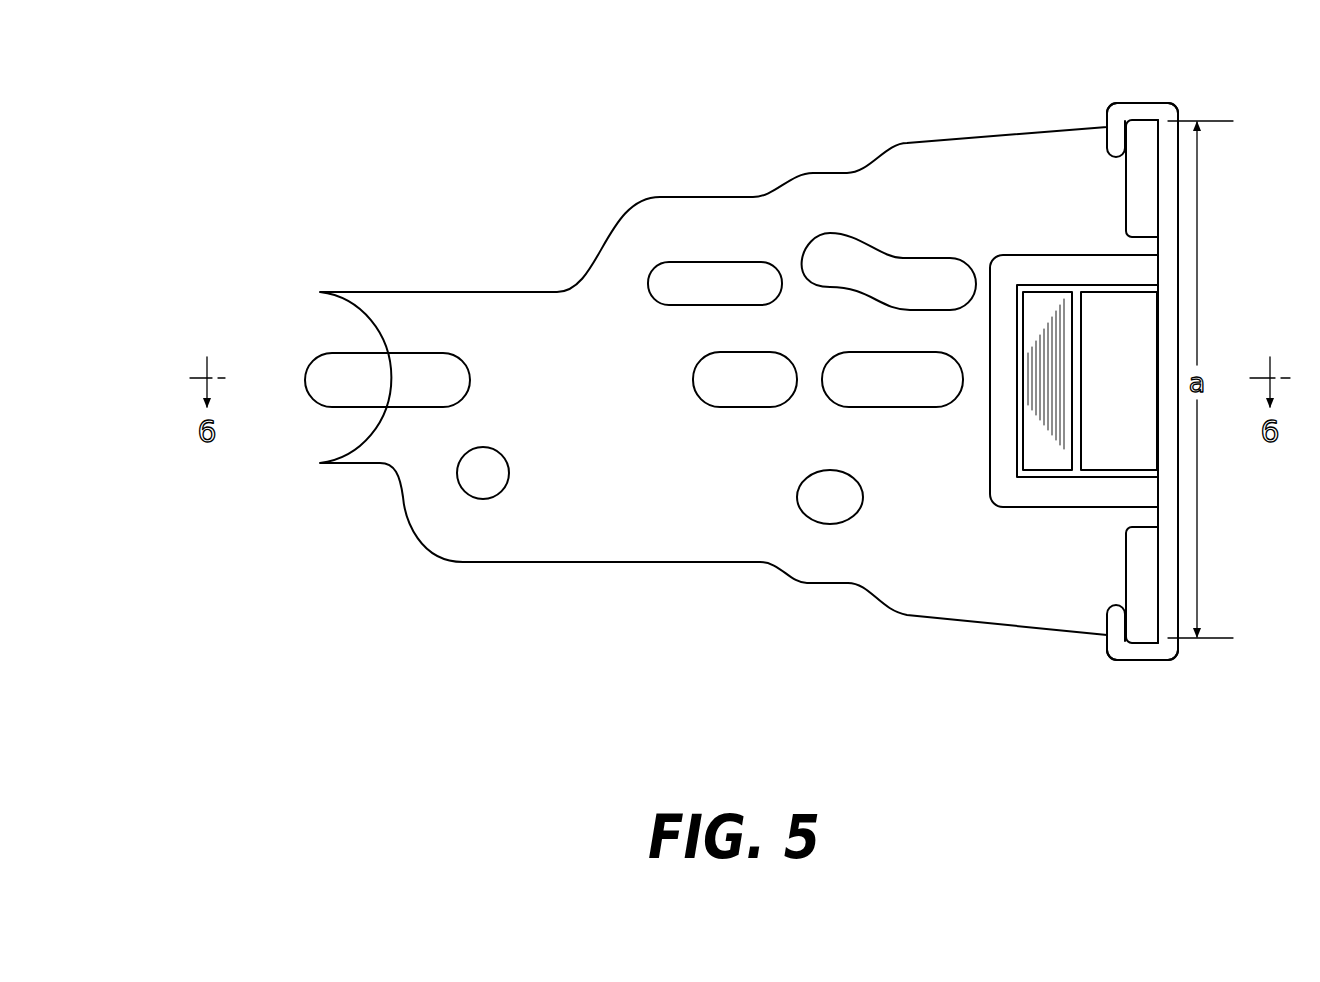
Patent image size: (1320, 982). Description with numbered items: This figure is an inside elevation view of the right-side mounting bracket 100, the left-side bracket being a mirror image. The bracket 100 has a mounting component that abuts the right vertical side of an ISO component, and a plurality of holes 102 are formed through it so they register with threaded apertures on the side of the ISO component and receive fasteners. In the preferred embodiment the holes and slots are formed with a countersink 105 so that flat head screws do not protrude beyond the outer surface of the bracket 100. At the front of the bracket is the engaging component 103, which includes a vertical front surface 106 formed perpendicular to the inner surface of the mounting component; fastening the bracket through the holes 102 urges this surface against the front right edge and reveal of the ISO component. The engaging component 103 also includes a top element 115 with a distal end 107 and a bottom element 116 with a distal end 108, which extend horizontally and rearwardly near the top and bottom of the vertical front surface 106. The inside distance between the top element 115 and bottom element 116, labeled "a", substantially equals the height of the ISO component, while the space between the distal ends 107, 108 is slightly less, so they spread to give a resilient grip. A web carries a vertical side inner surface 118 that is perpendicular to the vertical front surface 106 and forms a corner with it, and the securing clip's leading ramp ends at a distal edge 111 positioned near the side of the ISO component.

The right-side mounting bracket 100 is at (642, 496).
The holes 102 is at (696, 366).
The engaging component 103 is at (1161, 112).
The countersink 105 is at (647, 280).
The vertical front surface 106 is at (1161, 582).
The distal end 107 is at (1116, 608).
The distal end 108 is at (1117, 152).
The distal edge 111 is at (1017, 317).
The top element 115 is at (1104, 643).
The bottom element 116 is at (1106, 118).
The vertical side inner surface 118 is at (1104, 446).